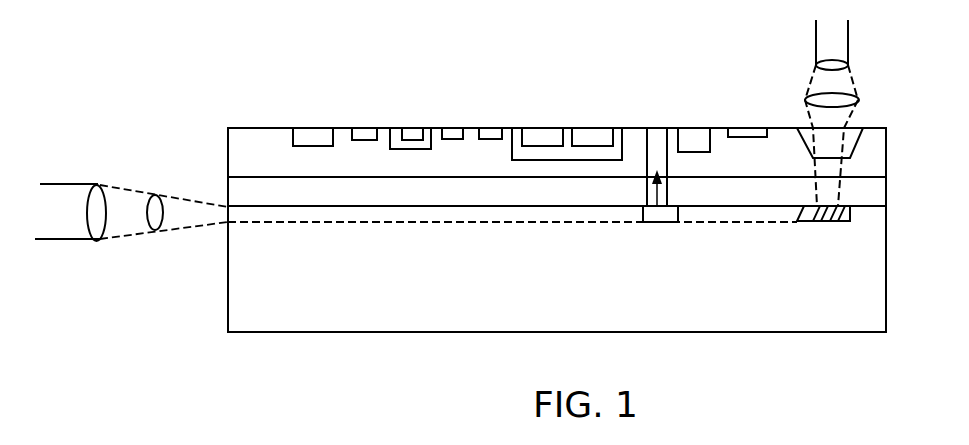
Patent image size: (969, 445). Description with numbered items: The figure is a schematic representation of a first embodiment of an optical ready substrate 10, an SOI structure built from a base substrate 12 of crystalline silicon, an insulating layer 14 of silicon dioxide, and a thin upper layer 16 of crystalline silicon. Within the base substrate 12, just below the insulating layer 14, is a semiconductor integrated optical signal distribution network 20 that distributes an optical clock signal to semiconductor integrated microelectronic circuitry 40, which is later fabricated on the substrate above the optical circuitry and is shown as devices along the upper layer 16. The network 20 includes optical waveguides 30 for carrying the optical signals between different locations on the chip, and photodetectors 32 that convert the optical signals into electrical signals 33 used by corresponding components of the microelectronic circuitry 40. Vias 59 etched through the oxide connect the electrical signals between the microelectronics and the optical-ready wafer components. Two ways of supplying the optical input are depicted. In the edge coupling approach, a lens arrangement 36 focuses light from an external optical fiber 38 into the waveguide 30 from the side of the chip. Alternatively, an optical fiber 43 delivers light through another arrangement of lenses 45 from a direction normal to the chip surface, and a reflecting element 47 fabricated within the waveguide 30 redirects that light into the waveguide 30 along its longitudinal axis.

The optical ready substrate 10 is at (265, 355).
The base substrate 12 is at (229, 300).
The insulating layer 14 is at (233, 190).
The thin upper layer 16 is at (258, 137).
The optical signal distribution network 20 is at (462, 242).
The optical waveguide 30 is at (293, 223).
The photodetector 32 is at (644, 223).
The electrical signals 33 is at (667, 193).
The lens arrangement 36 is at (153, 195).
The external optical fiber 38 is at (57, 183).
The microelectronic circuitry 40 is at (300, 123).
The optical fiber 43 is at (850, 36).
The lenses 45 is at (857, 97).
The reflecting element 47 is at (822, 226).
The vias 59 is at (658, 135).